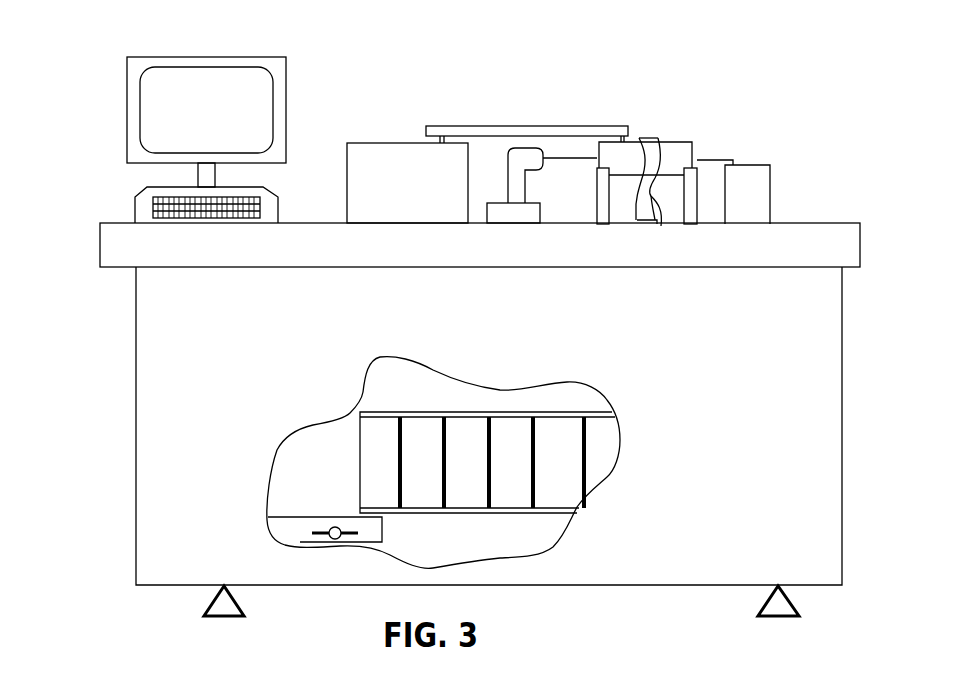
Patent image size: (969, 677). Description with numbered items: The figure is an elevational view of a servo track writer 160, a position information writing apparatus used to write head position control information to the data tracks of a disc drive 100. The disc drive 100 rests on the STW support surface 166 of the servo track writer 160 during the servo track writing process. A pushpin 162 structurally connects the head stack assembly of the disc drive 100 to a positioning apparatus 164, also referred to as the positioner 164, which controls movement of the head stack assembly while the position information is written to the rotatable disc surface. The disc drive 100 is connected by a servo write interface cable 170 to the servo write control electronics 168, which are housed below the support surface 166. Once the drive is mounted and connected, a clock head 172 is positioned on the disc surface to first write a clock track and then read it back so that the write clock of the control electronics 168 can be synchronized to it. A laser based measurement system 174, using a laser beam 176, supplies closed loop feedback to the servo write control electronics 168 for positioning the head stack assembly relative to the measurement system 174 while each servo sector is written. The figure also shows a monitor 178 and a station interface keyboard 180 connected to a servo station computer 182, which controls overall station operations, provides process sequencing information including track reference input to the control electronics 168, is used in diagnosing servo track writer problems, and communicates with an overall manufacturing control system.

The disc drive 100 is at (677, 155).
The servo track writer 160 is at (461, 80).
The pushpin 162 is at (552, 127).
The positioning apparatus 164 is at (382, 180).
The STW support surface 166 is at (128, 245).
The servo write control electronics 168 is at (467, 514).
The servo write interface cable 170 is at (660, 207).
The clock head 172 is at (717, 156).
The laser based measurement system 174 is at (505, 213).
The laser beam 176 is at (568, 158).
The monitor 178 is at (258, 110).
The station interface keyboard 180 is at (268, 205).
The servo station computer 182 is at (295, 532).